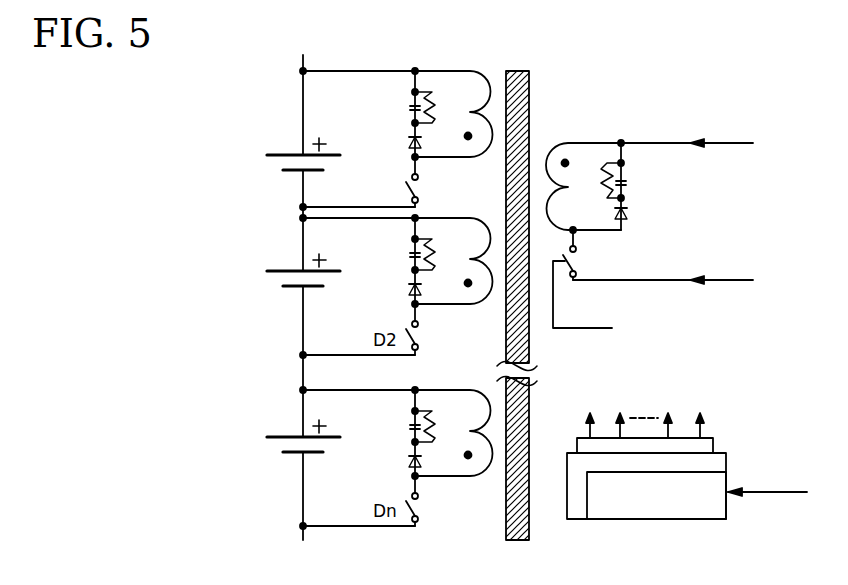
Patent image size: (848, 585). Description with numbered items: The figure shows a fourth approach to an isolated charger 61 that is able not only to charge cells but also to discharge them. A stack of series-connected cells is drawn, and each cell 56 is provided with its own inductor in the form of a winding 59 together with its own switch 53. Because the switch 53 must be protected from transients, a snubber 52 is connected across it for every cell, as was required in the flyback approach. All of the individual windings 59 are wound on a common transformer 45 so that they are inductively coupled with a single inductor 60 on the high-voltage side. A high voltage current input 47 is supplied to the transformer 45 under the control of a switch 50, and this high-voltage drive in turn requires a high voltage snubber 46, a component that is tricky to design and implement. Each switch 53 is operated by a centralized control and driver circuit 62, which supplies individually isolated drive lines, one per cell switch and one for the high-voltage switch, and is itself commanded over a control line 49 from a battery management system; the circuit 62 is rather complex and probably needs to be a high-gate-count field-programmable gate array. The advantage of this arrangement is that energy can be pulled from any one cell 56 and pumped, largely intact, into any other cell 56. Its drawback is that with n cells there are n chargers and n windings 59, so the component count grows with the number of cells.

The isolated charger 61 is at (270, 65).
The cell 56 is at (283, 155).
The snubber 52 is at (413, 118).
The winding 59 is at (478, 91).
The switch 53 is at (419, 194).
The transformer 45 is at (544, 69).
The inductor 60 is at (583, 143).
The high voltage snubber 46 is at (622, 190).
The high voltage current input 47 is at (722, 143).
The switch 50 is at (580, 261).
The control line 49 is at (763, 493).
The centralized control and driver circuit 62 is at (660, 520).